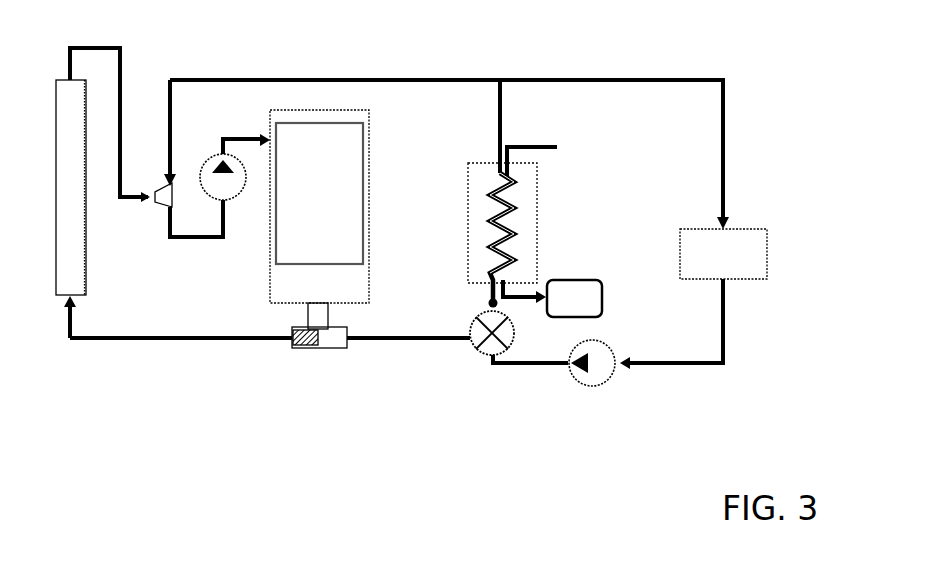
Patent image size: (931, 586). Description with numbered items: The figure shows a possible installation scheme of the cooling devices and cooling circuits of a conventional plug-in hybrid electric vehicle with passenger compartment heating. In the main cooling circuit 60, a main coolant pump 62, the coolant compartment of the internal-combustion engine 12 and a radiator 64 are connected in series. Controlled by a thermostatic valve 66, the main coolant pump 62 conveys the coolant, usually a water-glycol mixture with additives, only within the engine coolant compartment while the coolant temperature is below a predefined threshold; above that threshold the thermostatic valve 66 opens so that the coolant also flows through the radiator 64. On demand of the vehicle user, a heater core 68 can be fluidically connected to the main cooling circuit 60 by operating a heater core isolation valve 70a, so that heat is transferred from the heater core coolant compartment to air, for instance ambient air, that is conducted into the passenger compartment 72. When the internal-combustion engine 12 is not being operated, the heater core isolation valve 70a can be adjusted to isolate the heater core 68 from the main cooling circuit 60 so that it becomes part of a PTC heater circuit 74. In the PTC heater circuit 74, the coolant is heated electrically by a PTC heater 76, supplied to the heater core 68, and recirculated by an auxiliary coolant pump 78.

The internal-combustion engine 12 is at (333, 230).
The main cooling circuit 60 is at (160, 352).
The main coolant pump 62 is at (208, 170).
The radiator 64 is at (70, 225).
The thermostatic valve 66 is at (300, 350).
The heater core 68 is at (487, 210).
The heater core isolation valve 70a is at (480, 353).
The passenger compartment 72 is at (546, 299).
The PTC heater circuit 74 is at (656, 66).
The PTC heater 76 is at (738, 270).
The auxiliary coolant pump 78 is at (602, 376).